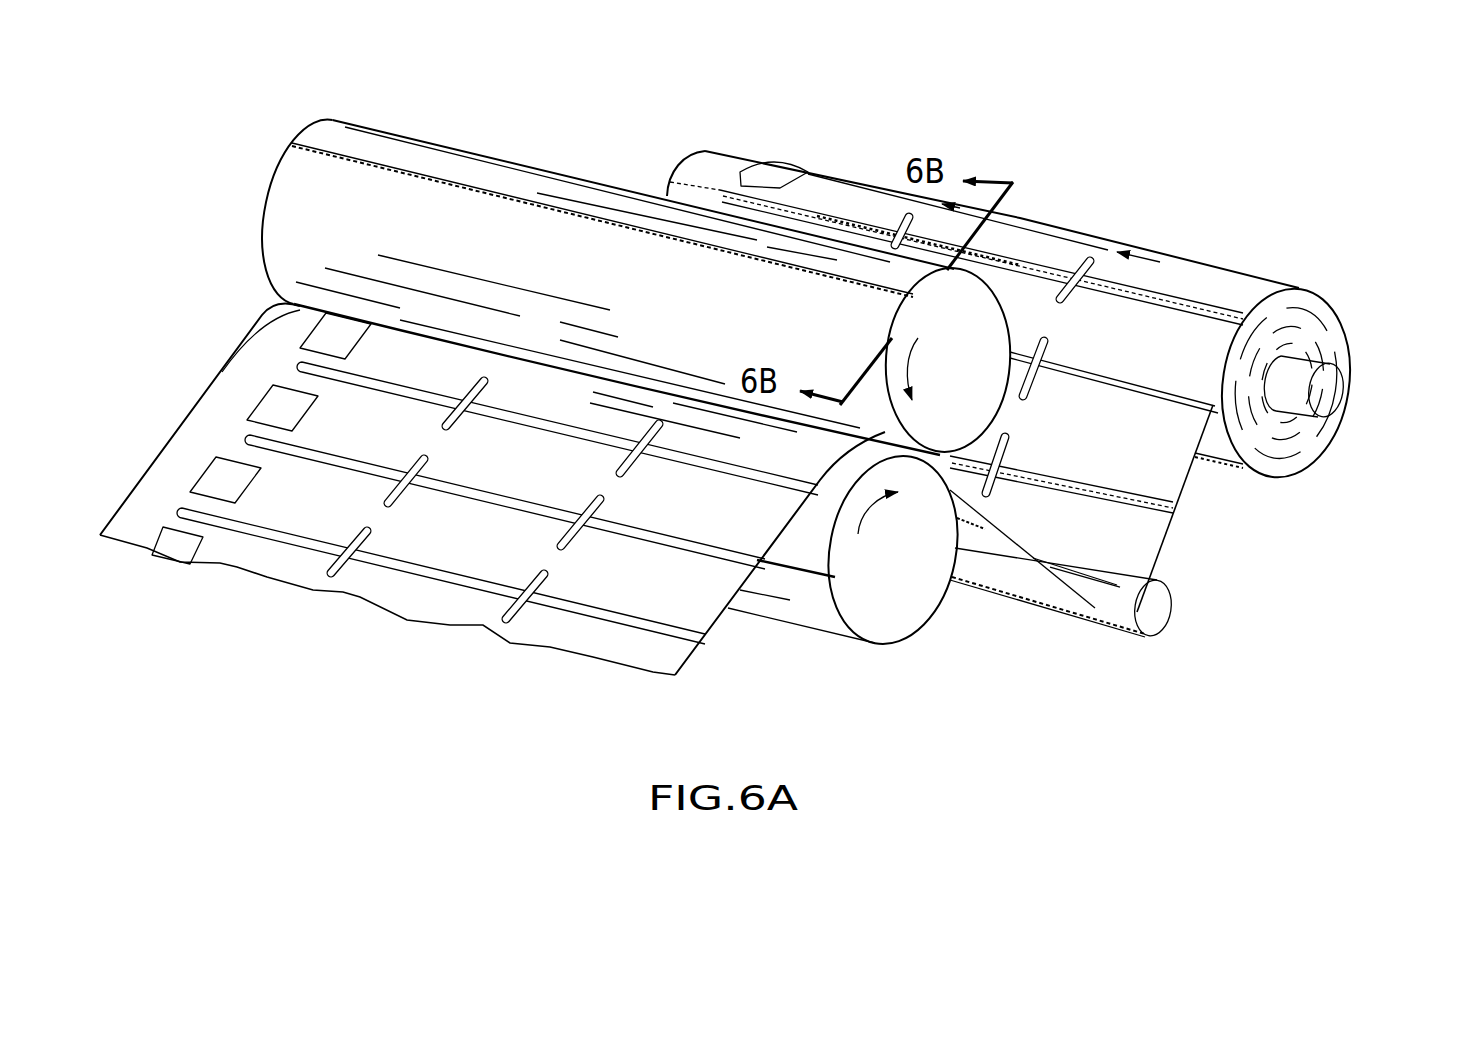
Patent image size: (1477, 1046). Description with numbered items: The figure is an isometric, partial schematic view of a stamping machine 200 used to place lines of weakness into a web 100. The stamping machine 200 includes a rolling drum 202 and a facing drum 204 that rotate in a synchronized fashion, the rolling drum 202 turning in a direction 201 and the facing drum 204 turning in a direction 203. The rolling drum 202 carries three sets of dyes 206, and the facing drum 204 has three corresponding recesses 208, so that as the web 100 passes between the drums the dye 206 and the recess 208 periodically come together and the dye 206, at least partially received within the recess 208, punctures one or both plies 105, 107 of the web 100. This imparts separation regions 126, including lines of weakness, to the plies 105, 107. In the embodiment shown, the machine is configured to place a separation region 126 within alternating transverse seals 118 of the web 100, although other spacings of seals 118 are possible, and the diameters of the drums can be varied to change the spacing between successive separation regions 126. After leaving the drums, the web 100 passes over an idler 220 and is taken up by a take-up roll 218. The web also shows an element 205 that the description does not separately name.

The web 100 is at (492, 525).
The ply 105 is at (492, 510).
The ply 107 is at (712, 626).
The transverse seal 118 is at (297, 367).
The separation region 126 is at (1168, 290).
The stamping machine 200 is at (249, 277).
The direction 201 is at (922, 375).
The rolling drum 202 is at (270, 176).
The direction 203 is at (878, 522).
The facing drum 204 is at (850, 571).
The transverse slits 205 is at (400, 543).
The dye 206 is at (930, 305).
The recess 208 is at (812, 584).
The take-up roll 218 is at (1365, 360).
The idler 220 is at (1185, 607).